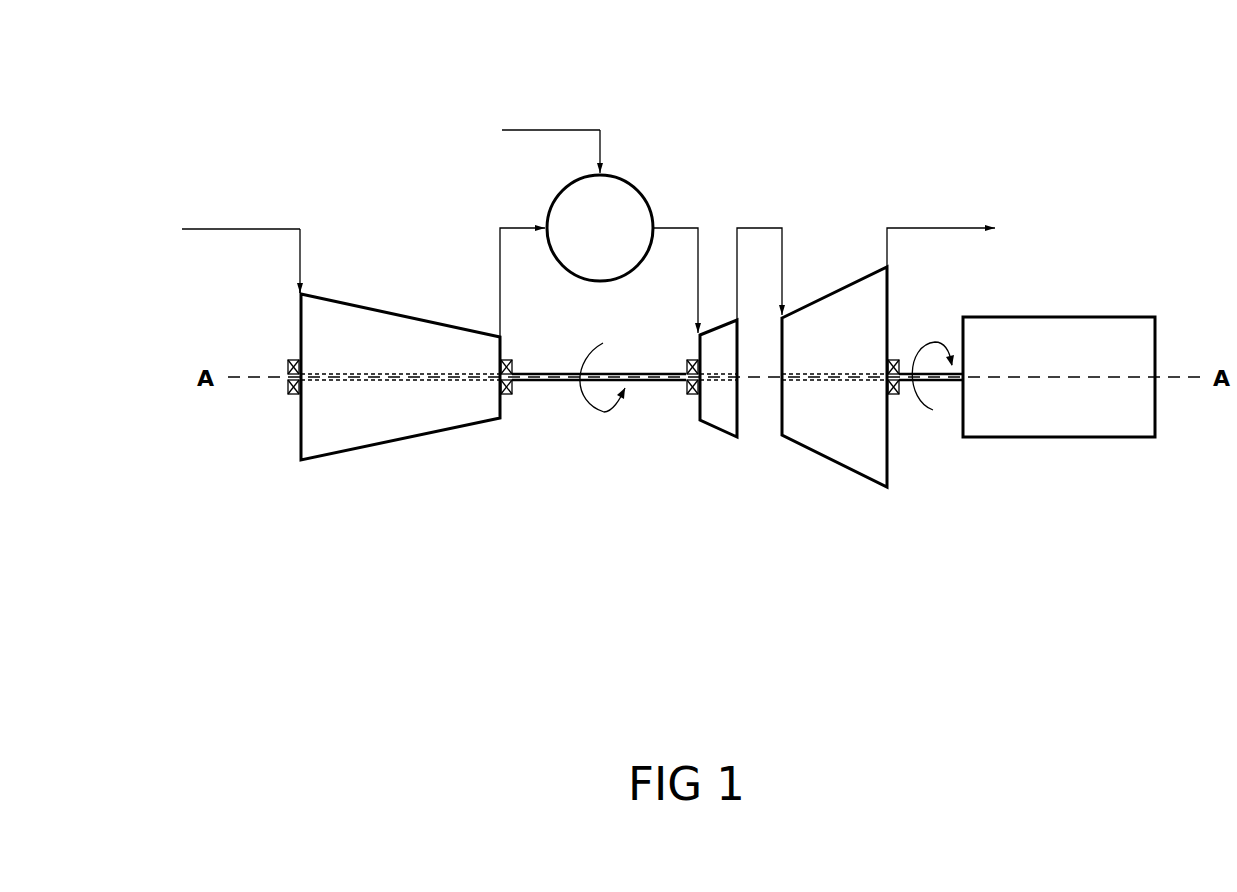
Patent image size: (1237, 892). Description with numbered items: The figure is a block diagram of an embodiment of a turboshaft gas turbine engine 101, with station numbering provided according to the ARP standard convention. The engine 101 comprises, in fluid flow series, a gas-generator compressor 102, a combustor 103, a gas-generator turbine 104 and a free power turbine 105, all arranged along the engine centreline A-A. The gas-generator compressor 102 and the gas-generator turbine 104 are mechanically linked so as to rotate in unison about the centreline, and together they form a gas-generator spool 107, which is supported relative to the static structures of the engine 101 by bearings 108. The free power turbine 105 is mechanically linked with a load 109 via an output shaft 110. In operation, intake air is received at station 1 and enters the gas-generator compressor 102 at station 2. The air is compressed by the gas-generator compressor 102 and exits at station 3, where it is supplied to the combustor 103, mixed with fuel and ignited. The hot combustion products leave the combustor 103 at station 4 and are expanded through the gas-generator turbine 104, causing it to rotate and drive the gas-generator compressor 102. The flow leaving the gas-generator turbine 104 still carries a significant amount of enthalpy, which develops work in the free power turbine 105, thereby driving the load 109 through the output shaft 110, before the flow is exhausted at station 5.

The engine 101 is at (237, 118).
The station 1 is at (242, 248).
The station 2 is at (289, 284).
The gas-generator compressor 102 is at (413, 323).
The station 3 is at (522, 281).
The combustor 103 is at (622, 241).
The station 4 is at (677, 283).
The gas-generator turbine 104 is at (699, 405).
The free power turbine 105 is at (782, 430).
The station 5 is at (940, 234).
The gas-generator spool 107 is at (622, 505).
The bearings 108 is at (288, 392).
The load 109 is at (1080, 363).
The output shaft 110 is at (940, 382).